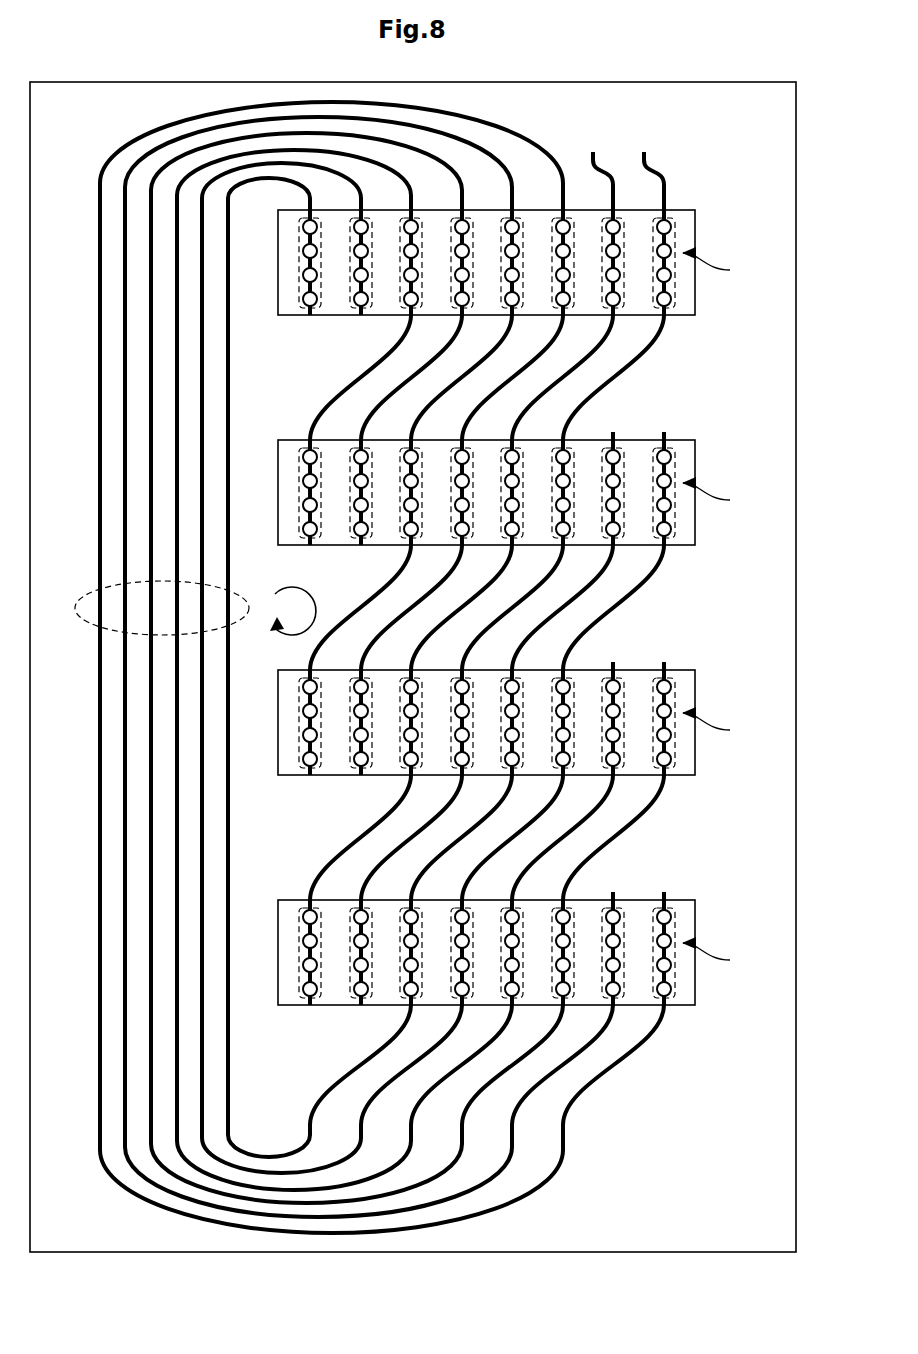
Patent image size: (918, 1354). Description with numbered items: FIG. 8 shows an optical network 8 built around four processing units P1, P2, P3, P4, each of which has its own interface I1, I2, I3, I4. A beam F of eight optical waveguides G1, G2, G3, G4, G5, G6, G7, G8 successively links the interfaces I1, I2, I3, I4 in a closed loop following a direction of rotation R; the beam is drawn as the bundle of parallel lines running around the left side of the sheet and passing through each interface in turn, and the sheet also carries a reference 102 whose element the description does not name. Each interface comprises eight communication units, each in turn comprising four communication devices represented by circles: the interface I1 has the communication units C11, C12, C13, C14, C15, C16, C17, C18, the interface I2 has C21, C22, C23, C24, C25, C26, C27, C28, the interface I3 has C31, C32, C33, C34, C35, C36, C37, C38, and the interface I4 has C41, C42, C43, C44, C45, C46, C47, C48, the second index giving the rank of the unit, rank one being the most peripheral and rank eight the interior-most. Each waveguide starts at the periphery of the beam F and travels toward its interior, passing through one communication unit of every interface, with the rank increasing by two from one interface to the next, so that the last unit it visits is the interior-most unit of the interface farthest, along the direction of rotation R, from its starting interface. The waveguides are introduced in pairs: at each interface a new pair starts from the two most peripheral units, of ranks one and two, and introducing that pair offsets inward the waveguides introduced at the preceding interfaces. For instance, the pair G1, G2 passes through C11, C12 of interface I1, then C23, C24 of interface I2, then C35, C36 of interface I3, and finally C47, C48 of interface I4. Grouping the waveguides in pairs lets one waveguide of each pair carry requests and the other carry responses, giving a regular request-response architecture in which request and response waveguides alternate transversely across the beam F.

The optical network 8 is at (172, 78).
The substrate 102 is at (764, 1228).
The beam F is at (93, 590).
The direction of rotation R is at (293, 611).
The optical waveguide G1 is at (646, 168).
The optical waveguide G2 is at (595, 168).
The optical waveguide G3 is at (664, 432).
The optical waveguide G4 is at (613, 432).
The optical waveguide G5 is at (664, 662).
The optical waveguide G6 is at (613, 662).
The optical waveguide G7 is at (664, 892).
The optical waveguide G8 is at (613, 892).
The processing unit P1 is at (688, 222).
The processing unit P2 is at (688, 452).
The processing unit P3 is at (688, 682).
The processing unit P4 is at (688, 912).
The interface I1 is at (717, 268).
The interface I2 is at (717, 498).
The interface I3 is at (717, 728).
The interface I4 is at (717, 958).
The communication unit C11 is at (675, 285).
The communication unit C12 is at (625, 307).
The communication unit C13 is at (553, 307).
The communication unit C14 is at (502, 307).
The communication unit C15 is at (455, 307).
The communication unit C16 is at (400, 312).
The communication unit C17 is at (349, 312).
The communication unit C18 is at (299, 312).
The communication unit C21 is at (675, 515).
The communication unit C22 is at (625, 537).
The communication unit C23 is at (553, 537).
The communication unit C24 is at (502, 537).
The communication unit C25 is at (455, 537).
The communication unit C26 is at (400, 542).
The communication unit C27 is at (340, 470).
The communication unit C28 is at (299, 542).
The communication unit C31 is at (675, 745).
The communication unit C32 is at (625, 767).
The communication unit C33 is at (553, 767).
The communication unit C34 is at (502, 767).
The communication unit C35 is at (455, 767).
The communication unit C36 is at (400, 772).
The communication unit C37 is at (349, 772).
The communication unit C38 is at (299, 772).
The communication unit C41 is at (675, 975).
The communication unit C42 is at (625, 997).
The communication unit C43 is at (553, 997).
The communication unit C44 is at (502, 997).
The communication unit C45 is at (455, 997).
The communication unit C46 is at (400, 1002).
The communication unit C47 is at (349, 1002).
The communication unit C48 is at (299, 1002).